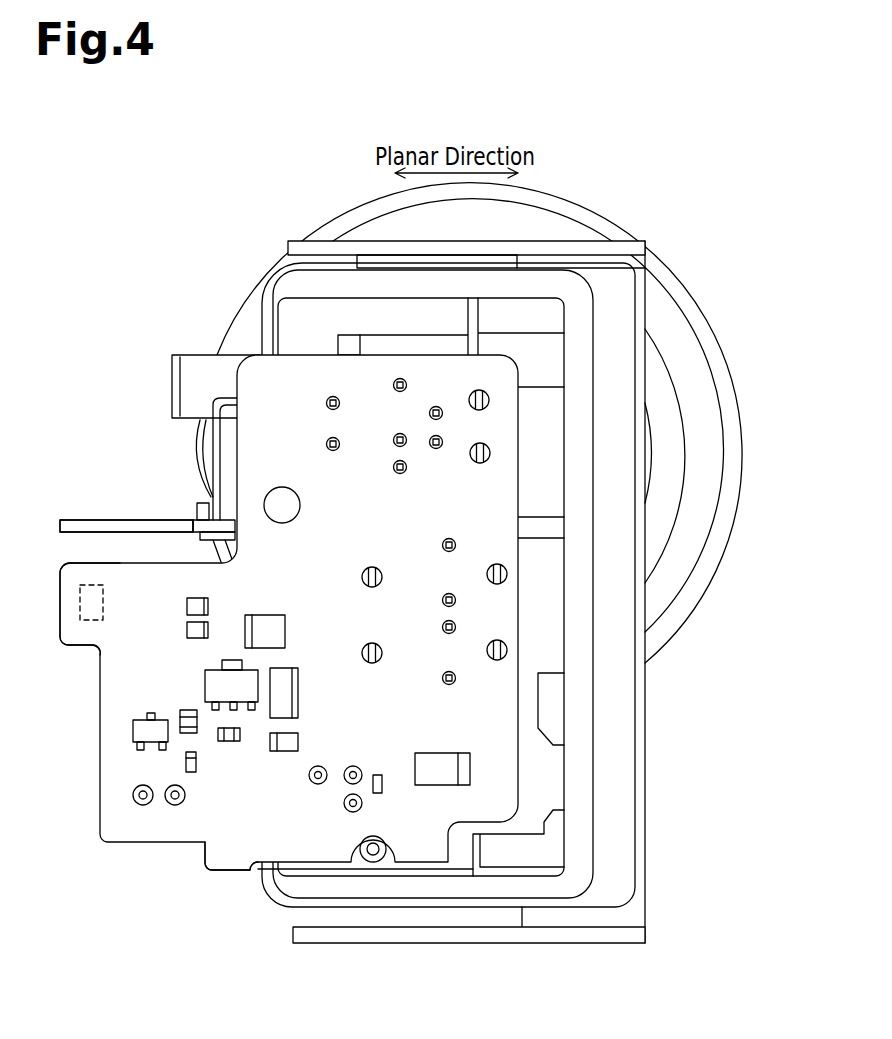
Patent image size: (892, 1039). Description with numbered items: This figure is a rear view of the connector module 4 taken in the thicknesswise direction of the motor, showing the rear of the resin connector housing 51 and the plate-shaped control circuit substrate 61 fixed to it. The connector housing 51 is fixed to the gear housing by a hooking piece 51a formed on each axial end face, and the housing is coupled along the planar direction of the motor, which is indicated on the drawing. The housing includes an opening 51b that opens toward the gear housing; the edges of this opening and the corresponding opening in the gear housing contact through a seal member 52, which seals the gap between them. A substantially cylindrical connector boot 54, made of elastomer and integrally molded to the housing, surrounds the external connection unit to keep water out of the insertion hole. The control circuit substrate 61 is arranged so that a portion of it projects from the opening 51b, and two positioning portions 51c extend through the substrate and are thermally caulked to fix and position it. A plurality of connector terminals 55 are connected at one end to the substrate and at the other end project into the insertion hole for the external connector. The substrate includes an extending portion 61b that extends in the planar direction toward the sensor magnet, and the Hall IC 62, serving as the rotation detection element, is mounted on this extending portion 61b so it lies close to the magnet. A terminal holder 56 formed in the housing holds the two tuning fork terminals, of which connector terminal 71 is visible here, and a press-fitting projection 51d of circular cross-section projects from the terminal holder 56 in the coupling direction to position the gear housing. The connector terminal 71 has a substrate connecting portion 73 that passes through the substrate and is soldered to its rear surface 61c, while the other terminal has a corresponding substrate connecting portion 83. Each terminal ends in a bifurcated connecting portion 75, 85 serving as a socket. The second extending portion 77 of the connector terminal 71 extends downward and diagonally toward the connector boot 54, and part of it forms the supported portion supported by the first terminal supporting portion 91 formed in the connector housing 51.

The connector module 4 is at (702, 208).
The connector housing 51 is at (635, 440).
The hooking piece 51a is at (352, 240).
The opening 51b is at (560, 757).
The positioning portion 51c is at (283, 524).
The press-fitting projection 51d is at (190, 355).
The seal member 52 is at (585, 725).
The connector boot 54 is at (705, 322).
The connector terminal 55 is at (478, 458).
The terminal holder 56 is at (338, 345).
The control circuit substrate 61 is at (125, 843).
The extending portion 61b is at (78, 645).
The rear surface 61c is at (198, 843).
The Hall IC 62 is at (104, 602).
The connector terminal 71 is at (212, 402).
The substrate connecting portion 73 is at (327, 400).
The bifurcated connecting portion 75 is at (74, 519).
The second extending portion 77 is at (206, 448).
The substrate connecting portion 83 is at (327, 442).
The bifurcated connecting portion 85 is at (126, 526).
The first terminal supporting portion 91 is at (208, 488).